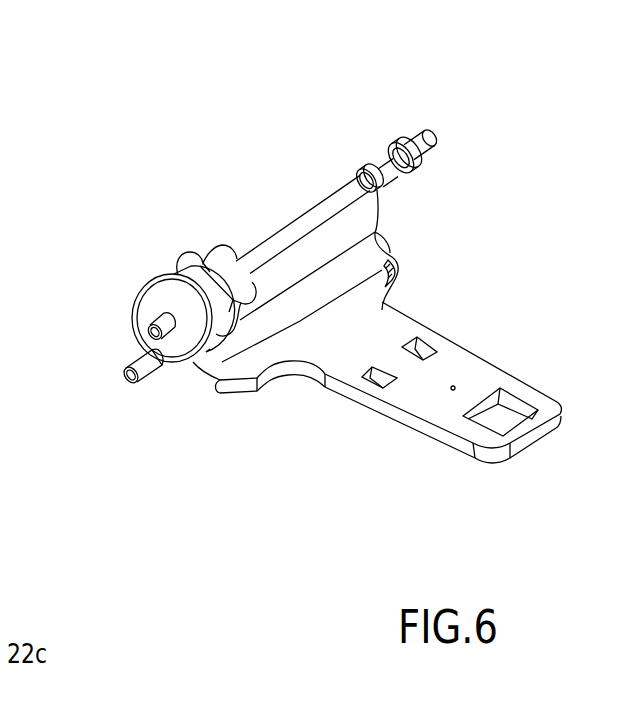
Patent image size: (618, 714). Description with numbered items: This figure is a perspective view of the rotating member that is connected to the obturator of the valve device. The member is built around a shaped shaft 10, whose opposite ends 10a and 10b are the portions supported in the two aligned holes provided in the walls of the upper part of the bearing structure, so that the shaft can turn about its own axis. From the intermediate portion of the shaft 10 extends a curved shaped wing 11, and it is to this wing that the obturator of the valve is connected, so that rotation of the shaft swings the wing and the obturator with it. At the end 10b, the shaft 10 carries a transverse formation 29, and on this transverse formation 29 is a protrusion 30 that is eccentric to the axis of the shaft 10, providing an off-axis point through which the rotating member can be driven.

The shaped shaft 10 is at (302, 214).
The end of the shaft 10a is at (423, 140).
The end of the shaft 10b is at (161, 309).
The curved shaped wing 11 is at (298, 301).
The transverse formation 29 is at (134, 327).
The protrusion 30 is at (147, 360).